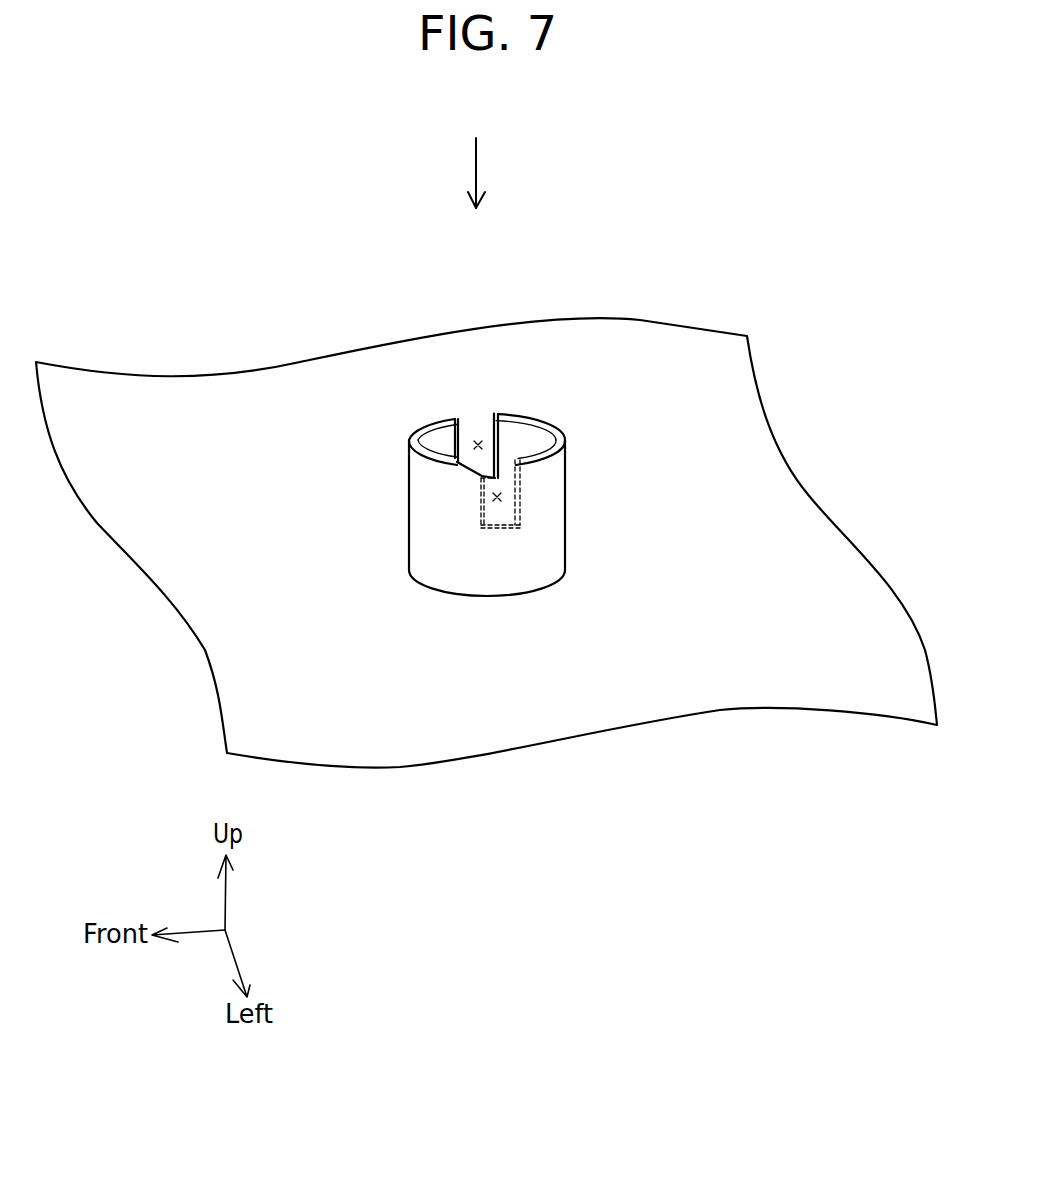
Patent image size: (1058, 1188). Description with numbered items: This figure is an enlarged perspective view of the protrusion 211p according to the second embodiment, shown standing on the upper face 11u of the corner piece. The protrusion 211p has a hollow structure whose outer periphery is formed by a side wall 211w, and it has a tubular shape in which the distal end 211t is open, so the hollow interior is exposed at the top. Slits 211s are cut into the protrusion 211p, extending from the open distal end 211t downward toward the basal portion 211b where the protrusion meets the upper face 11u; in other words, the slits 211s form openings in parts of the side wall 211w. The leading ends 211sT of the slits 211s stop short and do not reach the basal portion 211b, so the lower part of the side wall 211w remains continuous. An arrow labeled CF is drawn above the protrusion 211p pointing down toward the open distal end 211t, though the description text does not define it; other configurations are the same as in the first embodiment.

The protrusion 211p is at (575, 393).
The upper face 11u is at (687, 603).
The side wall 211w is at (430, 498).
The distal end 211t is at (523, 417).
The slits 211s is at (478, 440).
The leading ends of the slits 211sT is at (510, 528).
The basal portion 211b is at (505, 597).
The clamping force CF is at (482, 165).